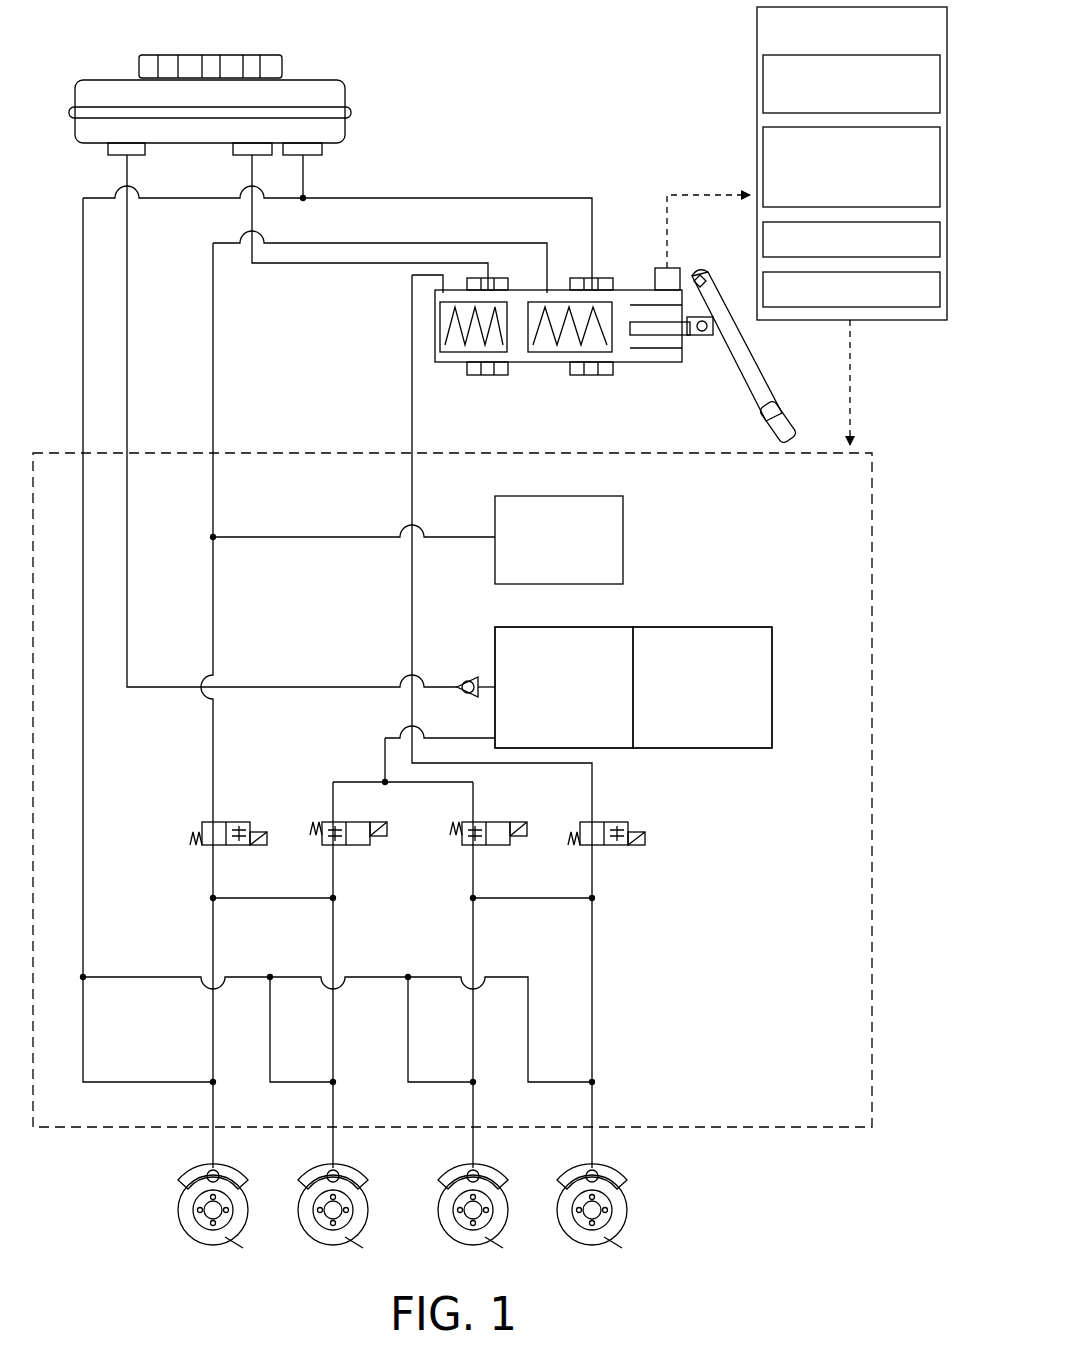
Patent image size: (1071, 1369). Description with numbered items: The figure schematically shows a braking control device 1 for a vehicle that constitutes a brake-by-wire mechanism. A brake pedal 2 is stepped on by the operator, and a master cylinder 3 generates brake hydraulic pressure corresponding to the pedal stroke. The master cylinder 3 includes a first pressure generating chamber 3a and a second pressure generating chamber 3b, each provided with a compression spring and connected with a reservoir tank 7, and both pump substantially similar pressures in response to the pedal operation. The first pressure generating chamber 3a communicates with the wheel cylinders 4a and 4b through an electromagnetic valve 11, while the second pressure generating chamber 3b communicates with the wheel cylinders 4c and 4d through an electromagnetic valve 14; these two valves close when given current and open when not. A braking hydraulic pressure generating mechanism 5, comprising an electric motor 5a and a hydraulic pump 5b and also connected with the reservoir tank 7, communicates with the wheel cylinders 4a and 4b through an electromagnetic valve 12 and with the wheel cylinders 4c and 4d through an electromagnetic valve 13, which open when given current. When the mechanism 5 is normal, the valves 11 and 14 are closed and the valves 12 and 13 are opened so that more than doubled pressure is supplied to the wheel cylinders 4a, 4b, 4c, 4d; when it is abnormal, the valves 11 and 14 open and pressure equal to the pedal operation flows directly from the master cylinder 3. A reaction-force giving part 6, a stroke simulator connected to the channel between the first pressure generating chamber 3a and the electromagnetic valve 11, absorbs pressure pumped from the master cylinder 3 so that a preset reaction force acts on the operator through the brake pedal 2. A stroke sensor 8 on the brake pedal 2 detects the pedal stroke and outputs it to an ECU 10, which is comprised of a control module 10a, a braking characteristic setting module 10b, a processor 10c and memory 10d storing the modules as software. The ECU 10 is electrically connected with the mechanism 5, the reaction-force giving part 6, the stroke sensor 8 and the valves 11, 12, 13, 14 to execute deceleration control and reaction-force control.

The braking control device 1 is at (652, 78).
The brake pedal 2 is at (738, 362).
The master cylinder 3 is at (574, 314).
The first pressure generating chamber 3a is at (557, 352).
The second pressure generating chamber 3b is at (450, 352).
The wheel cylinder 4a is at (178, 1216).
The wheel cylinder 4b is at (298, 1216).
The wheel cylinder 4c is at (438, 1216).
The wheel cylinder 4d is at (557, 1216).
The braking hydraulic pressure generating mechanism 5 is at (661, 668).
The electric motor 5a is at (723, 627).
The hydraulic pump 5b is at (583, 627).
The reaction-force giving part 6 is at (623, 530).
The reservoir tank 7 is at (325, 78).
The stroke sensor 8 is at (683, 268).
The ECU 10 is at (852, 163).
The control module 10a is at (851, 84).
The braking characteristic setting module 10b is at (851, 167).
The processor 10c is at (851, 239).
The memory 10d is at (851, 289).
The electromagnetic valve 11 is at (245, 820).
The electromagnetic valve 12 is at (360, 820).
The electromagnetic valve 13 is at (500, 820).
The electromagnetic valve 14 is at (620, 820).